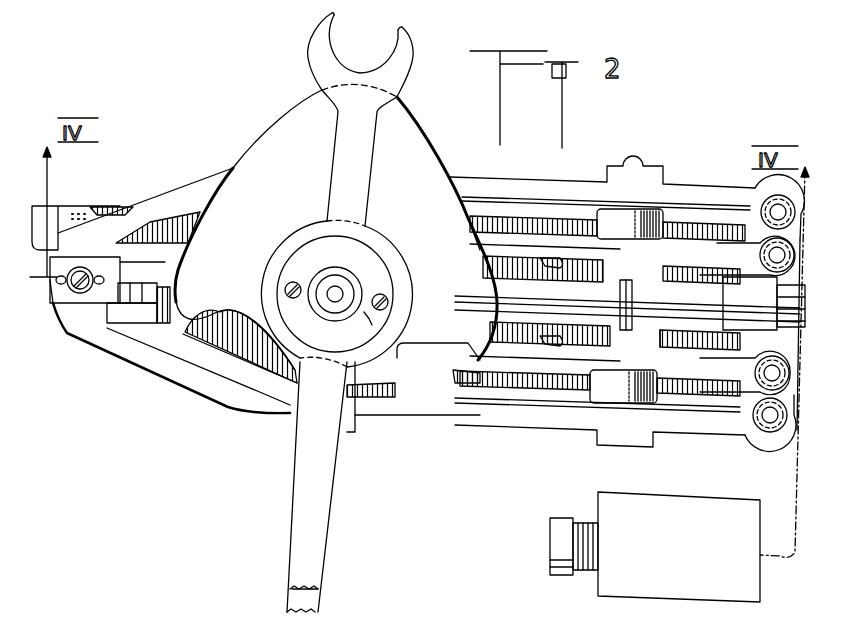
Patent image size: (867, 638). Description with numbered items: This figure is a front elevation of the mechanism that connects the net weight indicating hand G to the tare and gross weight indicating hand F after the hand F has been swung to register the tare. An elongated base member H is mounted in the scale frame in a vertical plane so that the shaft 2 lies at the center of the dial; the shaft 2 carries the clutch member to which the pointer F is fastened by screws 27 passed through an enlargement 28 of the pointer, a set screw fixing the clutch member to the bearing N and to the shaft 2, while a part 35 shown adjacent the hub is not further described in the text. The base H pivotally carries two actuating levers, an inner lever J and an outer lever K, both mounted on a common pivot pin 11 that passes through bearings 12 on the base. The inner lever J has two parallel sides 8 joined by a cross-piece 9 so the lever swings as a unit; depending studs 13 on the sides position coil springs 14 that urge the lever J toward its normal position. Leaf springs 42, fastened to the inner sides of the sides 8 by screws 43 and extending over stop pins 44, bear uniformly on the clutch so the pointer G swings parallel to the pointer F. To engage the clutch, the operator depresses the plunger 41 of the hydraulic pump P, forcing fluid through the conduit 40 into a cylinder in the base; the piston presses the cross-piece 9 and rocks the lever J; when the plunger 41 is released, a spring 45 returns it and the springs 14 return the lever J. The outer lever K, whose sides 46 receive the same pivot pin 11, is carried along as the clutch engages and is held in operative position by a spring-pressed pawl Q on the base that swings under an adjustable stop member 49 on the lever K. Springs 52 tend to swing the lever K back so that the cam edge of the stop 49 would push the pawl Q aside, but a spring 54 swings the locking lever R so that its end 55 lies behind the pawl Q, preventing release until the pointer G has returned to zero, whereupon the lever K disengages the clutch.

The shaft 2 is at (347, 292).
The sides of lever J 8 is at (673, 250).
The cross-piece 9 is at (441, 405).
The pivot pin 11 is at (632, 301).
The bearings 12 is at (622, 233).
The depending studs 13 is at (768, 247).
The coil springs 14 is at (768, 256).
The screws 27 is at (284, 291).
The enlargement 28 is at (375, 318).
The hub ring 35 is at (265, 263).
The conduit 40 is at (778, 306).
The plunger 41 is at (556, 541).
The leaf springs 42 is at (467, 248).
The screws 43 is at (560, 263).
The stop pins 44 is at (508, 338).
The spring 45 is at (583, 572).
The sides of lever K 46 is at (417, 413).
The adjustable stop member 49 is at (52, 302).
The springs 52 is at (780, 452).
The spring 54 is at (145, 262).
The end of locking lever 55 is at (166, 263).
The tare and gross weight indicating hand F is at (315, 479).
The net weight indicating hand G is at (299, 597).
The base member H is at (700, 388).
The inner actuating lever J is at (548, 238).
The outer actuating lever K is at (520, 193).
The bearing N is at (360, 287).
The hydraulic pump P is at (699, 580).
The spring-pressed pawl Q is at (140, 290).
The locking lever R is at (163, 281).